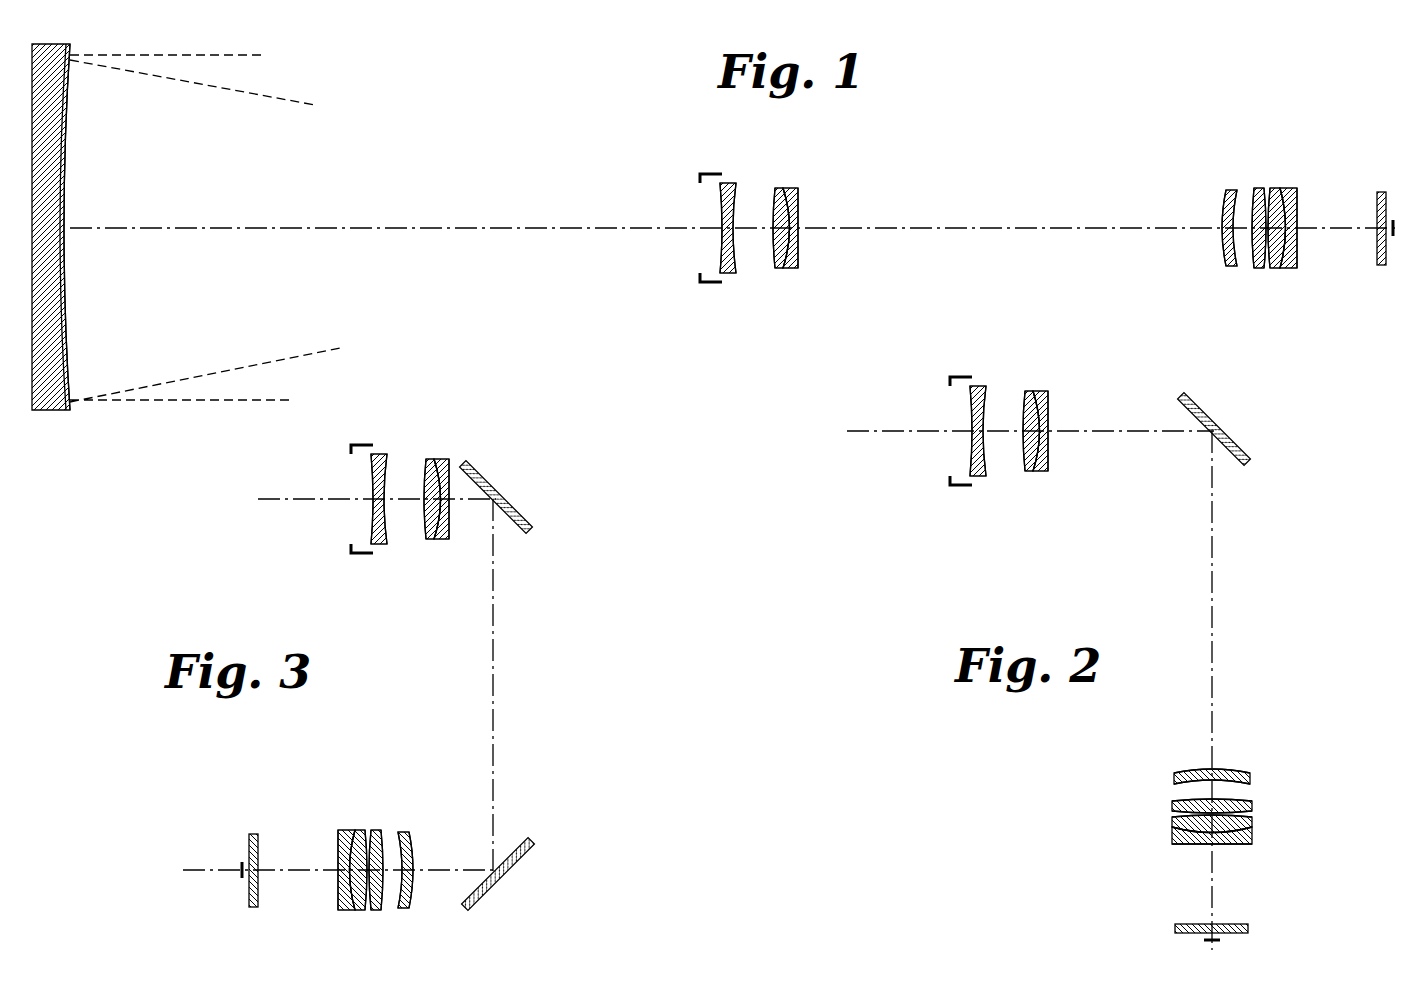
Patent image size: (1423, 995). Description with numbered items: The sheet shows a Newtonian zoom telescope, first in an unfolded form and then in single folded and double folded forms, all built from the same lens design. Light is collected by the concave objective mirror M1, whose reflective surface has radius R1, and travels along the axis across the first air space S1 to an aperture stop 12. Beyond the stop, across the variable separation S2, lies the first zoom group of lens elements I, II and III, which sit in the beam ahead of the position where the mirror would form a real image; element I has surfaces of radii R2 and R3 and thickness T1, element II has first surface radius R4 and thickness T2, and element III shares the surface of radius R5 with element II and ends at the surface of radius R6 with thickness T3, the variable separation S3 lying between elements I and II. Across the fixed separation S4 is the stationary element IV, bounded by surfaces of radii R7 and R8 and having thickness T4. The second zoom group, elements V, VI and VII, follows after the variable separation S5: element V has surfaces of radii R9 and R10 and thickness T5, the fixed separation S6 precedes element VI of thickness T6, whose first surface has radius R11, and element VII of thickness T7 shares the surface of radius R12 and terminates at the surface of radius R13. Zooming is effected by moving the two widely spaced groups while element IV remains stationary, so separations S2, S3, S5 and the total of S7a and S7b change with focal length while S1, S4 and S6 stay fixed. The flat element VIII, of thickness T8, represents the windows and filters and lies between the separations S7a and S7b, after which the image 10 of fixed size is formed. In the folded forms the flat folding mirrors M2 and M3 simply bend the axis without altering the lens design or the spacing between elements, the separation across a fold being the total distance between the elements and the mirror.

In FIG. 1, the objective mirror M1 is at (48, 413).
In FIG. 3, the flat folding mirror M2 is at (531, 520).
In FIG. 2, the flat folding mirror M2 is at (1238, 443).
In FIG. 3, the flat folding mirror M3 is at (515, 880).
In FIG. 1, the radius of reflective surface R1 is at (70, 72).
In FIG. 1, the radius of refractive surface R2 is at (721, 198).
In FIG. 3, the radius of refractive surface R2 is at (372, 470).
In FIG. 2, the radius of refractive surface R2 is at (971, 402).
In FIG. 1, the radius of refractive surface R3 is at (736, 200).
In FIG. 3, the radius of refractive surface R3 is at (387, 470).
In FIG. 2, the radius of refractive surface R3 is at (986, 403).
In FIG. 1, the radius of refractive surface R4 is at (776, 200).
In FIG. 3, the radius of refractive surface R4 is at (426, 472).
In FIG. 2, the radius of refractive surface R4 is at (1028, 403).
In FIG. 1, the radius of refractive surface R5 is at (784, 192).
In FIG. 3, the radius of refractive surface R5 is at (434, 465).
In FIG. 2, the radius of refractive surface R5 is at (1035, 397).
In FIG. 1, the radius of refractive surface R6 is at (799, 198).
In FIG. 3, the radius of refractive surface R6 is at (448, 470).
In FIG. 2, the radius of refractive surface R6 is at (1051, 402).
In FIG. 1, the radius of refractive surface R7 is at (1225, 200).
In FIG. 3, the radius of refractive surface R7 is at (412, 840).
In FIG. 2, the radius of refractive surface R7 is at (1236, 772).
In FIG. 1, the radius of refractive surface R8 is at (1236, 198).
In FIG. 3, the radius of refractive surface R8 is at (410, 838).
In FIG. 2, the radius of refractive surface R8 is at (1238, 785).
In FIG. 1, the radius of refractive surface R9 is at (1254, 198).
In FIG. 3, the radius of refractive surface R9 is at (384, 838).
In FIG. 2, the radius of refractive surface R9 is at (1245, 800).
In FIG. 1, the radius of refractive surface R10 is at (1265, 200).
In FIG. 3, the radius of refractive surface R10 is at (370, 836).
In FIG. 2, the radius of refractive surface R10 is at (1245, 812).
In FIG. 1, the radius of refractive surface R11 is at (1271, 190).
In FIG. 3, the radius of refractive surface R11 is at (364, 838).
In FIG. 2, the radius of refractive surface R11 is at (1250, 821).
In FIG. 1, the radius of refractive surface R12 is at (1281, 196).
In FIG. 3, the radius of refractive surface R12 is at (352, 842).
In FIG. 2, the radius of refractive surface R12 is at (1250, 834).
In FIG. 1, the radius of refractive surface R13 is at (1298, 195).
In FIG. 3, the radius of refractive surface R13 is at (340, 840).
In FIG. 2, the radius of refractive surface R13 is at (1245, 843).
In FIG. 1, the first air space S1 is at (414, 227).
In FIG. 1, the air space S2 is at (709, 224).
In FIG. 3, the air space S2 is at (362, 496).
In FIG. 2, the air space S2 is at (962, 429).
In FIG. 1, the air space S3 is at (750, 227).
In FIG. 3, the air space S3 is at (402, 499).
In FIG. 2, the air space S3 is at (1008, 432).
In FIG. 1, the air space S4 is at (1040, 227).
In FIG. 3, the air space S4 is at (495, 670).
In FIG. 2, the air space S4 is at (1214, 648).
In FIG. 1, the air space S5 is at (1246, 226).
In FIG. 3, the air space S5 is at (392, 868).
In FIG. 2, the air space S5 is at (1212, 790).
In FIG. 1, the air space S6 is at (1268, 224).
In FIG. 3, the air space S6 is at (366, 868).
In FIG. 2, the air space S6 is at (1222, 818).
In FIG. 1, the separation S7a is at (1352, 227).
In FIG. 3, the separation S7a is at (287, 870).
In FIG. 2, the separation S7a is at (1215, 892).
In FIG. 1, the separation S7b is at (1394, 222).
In FIG. 3, the separation S7b is at (243, 865).
In FIG. 2, the separation S7b is at (1222, 938).
In FIG. 1, the thickness of lens element T1 is at (725, 233).
In FIG. 3, the thickness of lens element T1 is at (378, 505).
In FIG. 2, the thickness of lens element T1 is at (977, 437).
In FIG. 1, the thickness of lens element T2 is at (784, 235).
In FIG. 3, the thickness of lens element T2 is at (433, 507).
In FIG. 2, the thickness of lens element T2 is at (1038, 441).
In FIG. 1, the thickness of lens element T3 is at (796, 238).
In FIG. 3, the thickness of lens element T3 is at (445, 508).
In FIG. 2, the thickness of lens element T3 is at (1050, 442).
In FIG. 1, the thickness of lens element T4 is at (1247, 224).
In FIG. 3, the thickness of lens element T4 is at (406, 876).
In FIG. 2, the thickness of lens element T4 is at (1205, 778).
In FIG. 1, the thickness of lens element T5 is at (1233, 244).
In FIG. 3, the thickness of lens element T5 is at (408, 888).
In FIG. 2, the thickness of lens element T5 is at (1222, 805).
In FIG. 1, the thickness of lens element T6 is at (1287, 247).
In FIG. 3, the thickness of lens element T6 is at (358, 887).
In FIG. 2, the thickness of lens element T6 is at (1195, 838).
In FIG. 1, the thickness of lens element T7 is at (1288, 236).
In FIG. 3, the thickness of lens element T7 is at (348, 875).
In FIG. 2, the thickness of lens element T7 is at (1205, 843).
In FIG. 1, the thickness of flat element T8 is at (1380, 235).
In FIG. 3, the thickness of flat element T8 is at (259, 880).
In FIG. 2, the thickness of flat element T8 is at (1210, 925).
In FIG. 1, the image 10 is at (1395, 236).
In FIG. 3, the image 10 is at (241, 870).
In FIG. 2, the image 10 is at (1207, 945).
In FIG. 1, the aperture stop 12 is at (700, 286).
In FIG. 3, the aperture stop 12 is at (350, 556).
In FIG. 2, the aperture stop 12 is at (952, 488).
In FIG. 1, the first lens element I is at (729, 276).
In FIG. 3, the first lens element I is at (381, 546).
In FIG. 2, the first lens element I is at (981, 480).
In FIG. 1, the second lens element II is at (781, 272).
In FIG. 3, the second lens element II is at (430, 542).
In FIG. 2, the second lens element II is at (1033, 476).
In FIG. 1, the third lens element III is at (792, 272).
In FIG. 3, the third lens element III is at (440, 542).
In FIG. 2, the third lens element III is at (1044, 476).
In FIG. 1, the fourth lens element IV is at (1230, 270).
In FIG. 3, the fourth lens element IV is at (407, 906).
In FIG. 2, the fourth lens element IV is at (1171, 777).
In FIG. 1, the fifth lens element V is at (1258, 270).
In FIG. 3, the fifth lens element V is at (377, 910).
In FIG. 2, the fifth lens element V is at (1171, 805).
In FIG. 1, the sixth lens element VI is at (1281, 270).
In FIG. 3, the sixth lens element VI is at (355, 910).
In FIG. 2, the sixth lens element VI is at (1171, 826).
In FIG. 1, the seventh lens element VII is at (1290, 270).
In FIG. 3, the seventh lens element VII is at (348, 910).
In FIG. 2, the seventh lens element VII is at (1171, 838).
In FIG. 1, the flat element VIII is at (1381, 268).
In FIG. 3, the flat element VIII is at (258, 908).
In FIG. 2, the flat element VIII is at (1171, 925).